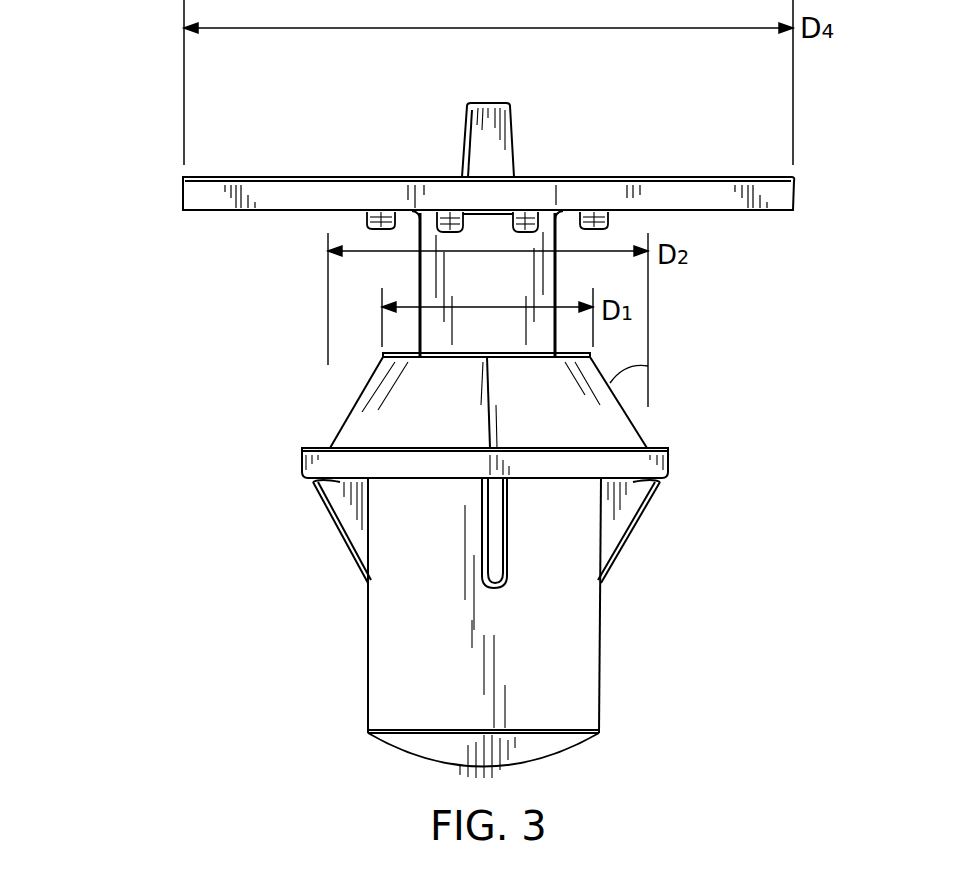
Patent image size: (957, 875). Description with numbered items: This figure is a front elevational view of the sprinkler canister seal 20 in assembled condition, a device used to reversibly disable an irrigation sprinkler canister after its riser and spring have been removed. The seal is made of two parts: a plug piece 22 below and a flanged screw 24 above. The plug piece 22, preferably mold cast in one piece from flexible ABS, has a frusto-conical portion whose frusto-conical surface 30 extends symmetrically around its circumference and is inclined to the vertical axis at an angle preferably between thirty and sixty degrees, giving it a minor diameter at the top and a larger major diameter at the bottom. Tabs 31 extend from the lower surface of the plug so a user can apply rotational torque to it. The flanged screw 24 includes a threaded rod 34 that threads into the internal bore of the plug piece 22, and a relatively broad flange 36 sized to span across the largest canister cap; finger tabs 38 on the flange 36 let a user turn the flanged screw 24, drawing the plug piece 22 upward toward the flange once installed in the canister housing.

The sprinkler canister seal 20 is at (77, 119).
The plug piece 22 is at (657, 532).
The flanged screw 24 is at (699, 178).
The frusto-conical surface 30 is at (616, 398).
The tabs 31 is at (350, 545).
The threaded rod 34 is at (545, 281).
The flange 36 is at (555, 192).
The finger tabs 38 is at (488, 112).